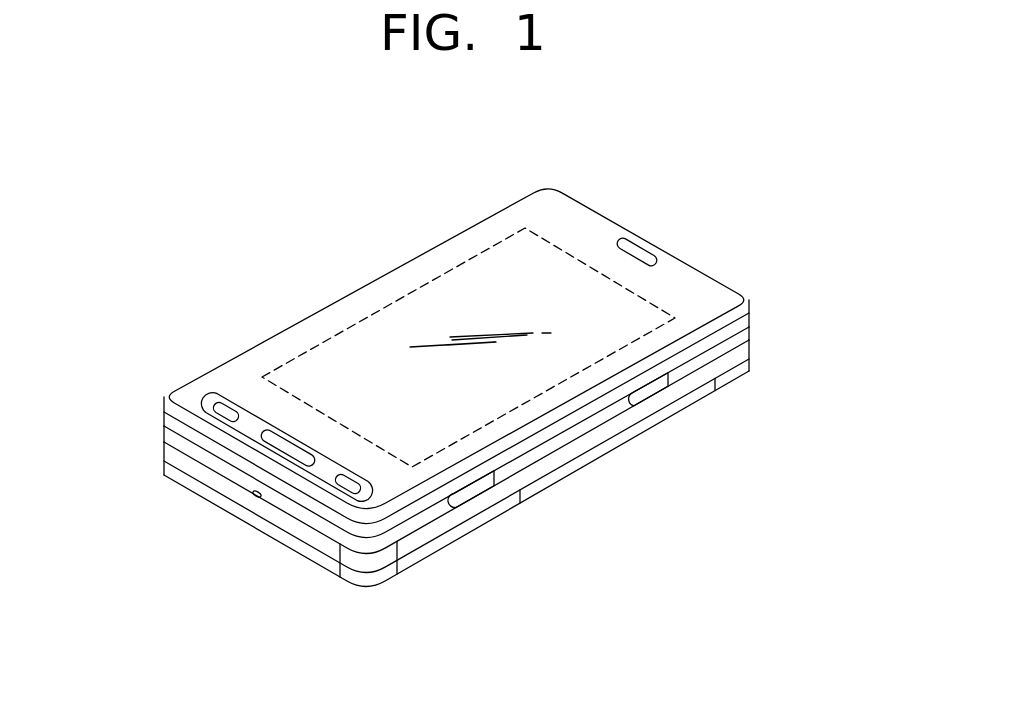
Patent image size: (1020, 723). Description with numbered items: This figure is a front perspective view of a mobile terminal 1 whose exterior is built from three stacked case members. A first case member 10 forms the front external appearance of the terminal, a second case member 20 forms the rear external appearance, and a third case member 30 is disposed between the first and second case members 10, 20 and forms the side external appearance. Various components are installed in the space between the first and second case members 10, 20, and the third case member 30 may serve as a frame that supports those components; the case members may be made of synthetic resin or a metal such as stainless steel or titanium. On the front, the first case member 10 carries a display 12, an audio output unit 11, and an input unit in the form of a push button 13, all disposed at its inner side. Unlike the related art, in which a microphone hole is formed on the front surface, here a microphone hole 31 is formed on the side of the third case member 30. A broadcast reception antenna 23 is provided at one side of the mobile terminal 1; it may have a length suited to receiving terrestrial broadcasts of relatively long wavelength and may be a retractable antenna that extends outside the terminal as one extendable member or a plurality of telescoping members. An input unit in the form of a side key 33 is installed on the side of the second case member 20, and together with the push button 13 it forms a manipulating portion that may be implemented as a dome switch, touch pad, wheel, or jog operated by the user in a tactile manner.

The mobile terminal 1 is at (412, 213).
The first case member 10 is at (233, 378).
The audio output unit 11 is at (638, 252).
The display 12 is at (387, 303).
The push button 13 is at (283, 443).
The second case member 20 is at (187, 478).
The broadcast reception antenna 23 is at (370, 575).
The third case member 30 is at (178, 450).
The microphone hole 31 is at (255, 498).
The side key 33 is at (493, 472).